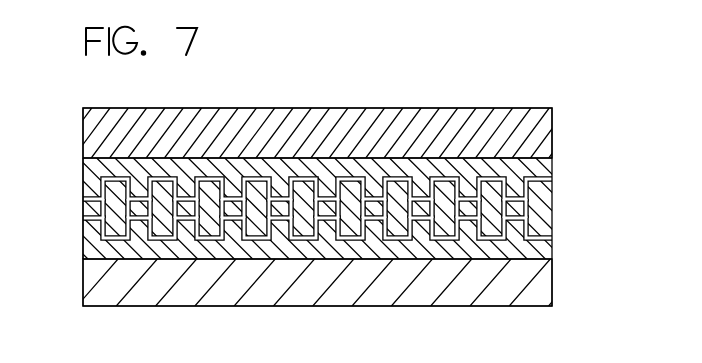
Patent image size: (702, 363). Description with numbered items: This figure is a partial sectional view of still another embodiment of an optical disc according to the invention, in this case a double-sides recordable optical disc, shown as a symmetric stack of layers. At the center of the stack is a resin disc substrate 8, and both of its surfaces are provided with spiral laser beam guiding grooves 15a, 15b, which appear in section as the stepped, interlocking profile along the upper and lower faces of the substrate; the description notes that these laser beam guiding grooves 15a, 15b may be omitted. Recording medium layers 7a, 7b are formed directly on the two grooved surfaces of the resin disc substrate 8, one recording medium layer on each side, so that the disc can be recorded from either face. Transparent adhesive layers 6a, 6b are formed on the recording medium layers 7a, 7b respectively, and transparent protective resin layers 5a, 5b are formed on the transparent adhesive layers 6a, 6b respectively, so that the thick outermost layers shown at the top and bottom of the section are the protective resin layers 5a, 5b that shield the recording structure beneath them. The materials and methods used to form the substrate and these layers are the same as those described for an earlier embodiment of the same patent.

The transparent protective resin layer 5a is at (358, 108).
The transparent protective resin layer 5b is at (379, 306).
The transparent adhesive layer 6a is at (83, 180).
The transparent adhesive layer 6b is at (83, 242).
The recording medium layer 7a is at (553, 182).
The recording medium layer 7b is at (553, 241).
The resin disc substrate 8 is at (553, 206).
The spiral laser beam guiding groove 15a is at (553, 194).
The spiral laser beam guiding groove 15b is at (553, 226).